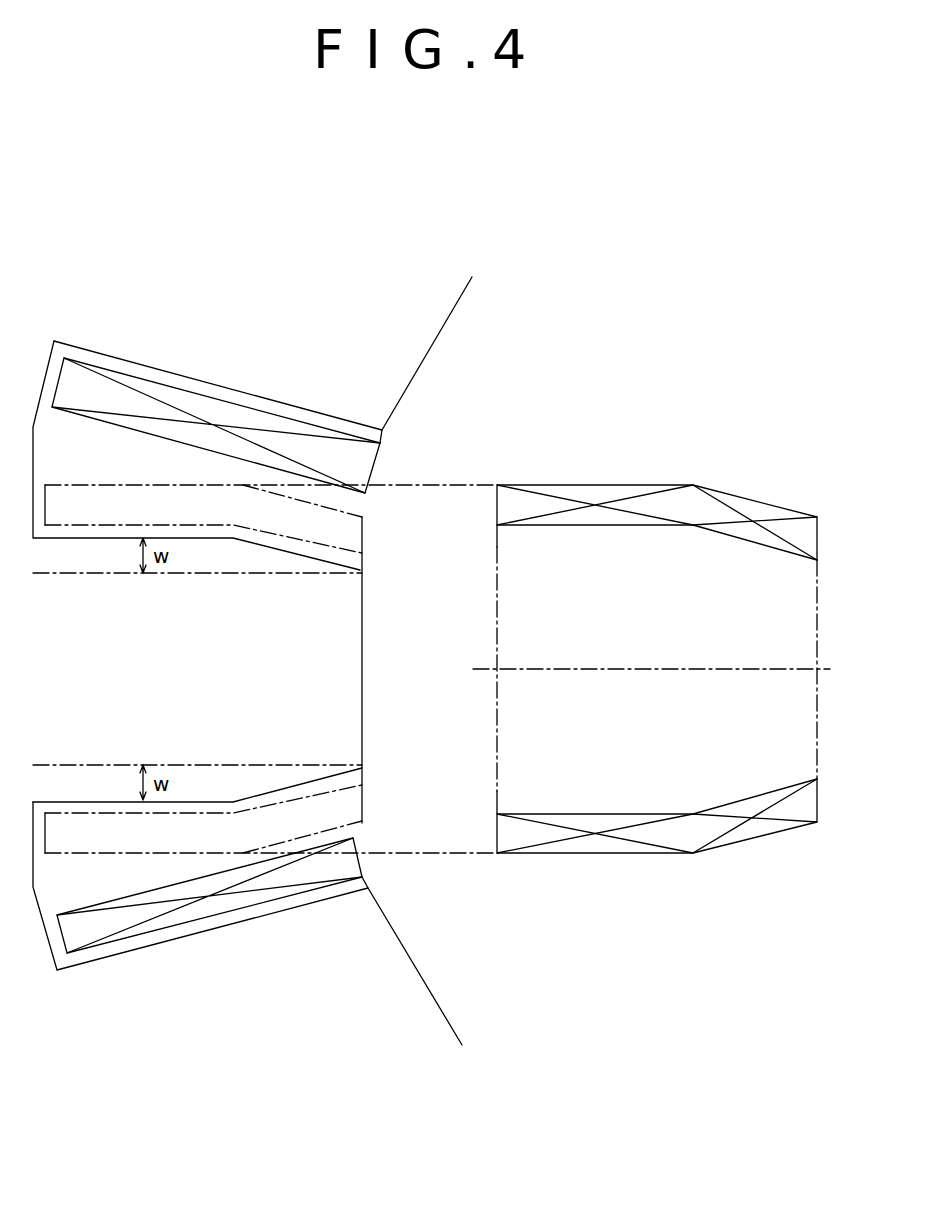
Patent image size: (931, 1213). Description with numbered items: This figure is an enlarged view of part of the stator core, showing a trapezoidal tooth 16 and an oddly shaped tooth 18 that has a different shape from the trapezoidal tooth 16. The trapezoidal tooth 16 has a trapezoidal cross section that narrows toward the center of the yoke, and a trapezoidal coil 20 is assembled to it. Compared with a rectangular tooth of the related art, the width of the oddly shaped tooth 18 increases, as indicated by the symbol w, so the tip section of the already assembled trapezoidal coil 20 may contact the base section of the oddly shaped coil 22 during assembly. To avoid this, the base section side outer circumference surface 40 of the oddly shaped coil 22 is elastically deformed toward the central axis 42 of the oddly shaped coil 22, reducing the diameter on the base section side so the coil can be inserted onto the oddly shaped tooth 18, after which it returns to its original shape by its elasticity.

The trapezoidal tooth 16 is at (443, 328).
The oddly shaped tooth 18 is at (363, 670).
The trapezoidal coil 20 is at (240, 420).
The oddly shaped coil 22 is at (760, 825).
The base section side outer circumference surface 40 is at (623, 485).
The central axis 42 is at (627, 670).